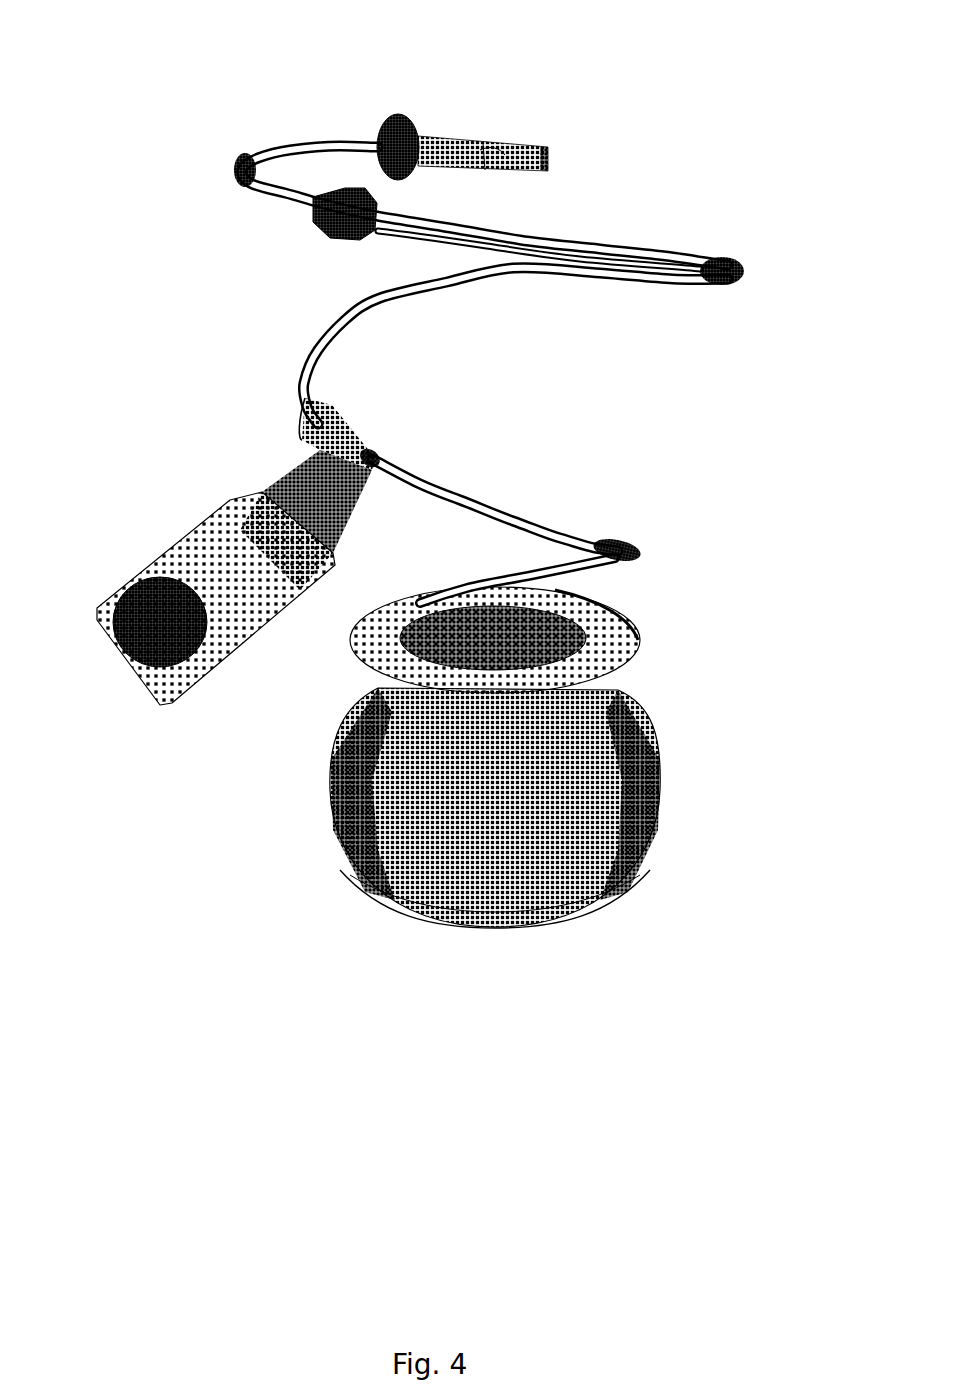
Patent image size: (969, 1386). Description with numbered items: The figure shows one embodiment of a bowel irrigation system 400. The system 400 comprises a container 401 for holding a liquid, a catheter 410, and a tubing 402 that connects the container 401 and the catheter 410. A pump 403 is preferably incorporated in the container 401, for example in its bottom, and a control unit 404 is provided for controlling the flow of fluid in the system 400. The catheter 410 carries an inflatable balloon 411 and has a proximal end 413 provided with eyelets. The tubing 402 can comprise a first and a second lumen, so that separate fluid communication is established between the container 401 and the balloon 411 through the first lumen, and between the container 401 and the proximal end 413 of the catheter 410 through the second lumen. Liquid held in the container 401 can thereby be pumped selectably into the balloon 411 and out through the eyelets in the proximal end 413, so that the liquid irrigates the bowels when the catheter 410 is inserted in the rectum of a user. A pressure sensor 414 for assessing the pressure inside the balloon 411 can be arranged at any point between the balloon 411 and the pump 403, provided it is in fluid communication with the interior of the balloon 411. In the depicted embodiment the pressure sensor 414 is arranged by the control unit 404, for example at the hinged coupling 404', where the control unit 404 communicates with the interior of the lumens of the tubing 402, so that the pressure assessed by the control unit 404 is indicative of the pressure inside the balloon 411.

The bowel irrigation system 400 is at (192, 297).
The container 401 is at (477, 850).
The tubing 402 is at (645, 257).
The pump 403 is at (473, 923).
The control unit 404 is at (201, 570).
The hinged coupling 404' is at (362, 442).
The catheter 410 is at (493, 115).
The inflatable balloon 411 is at (526, 142).
The proximal end of the catheter 413 is at (563, 153).
The pressure sensor 414 is at (373, 458).